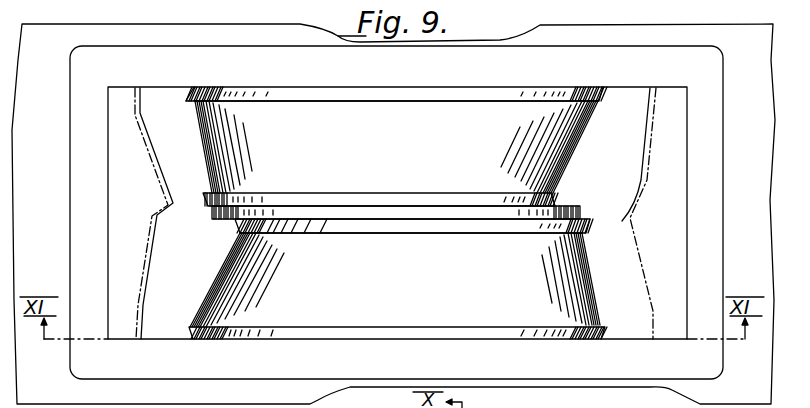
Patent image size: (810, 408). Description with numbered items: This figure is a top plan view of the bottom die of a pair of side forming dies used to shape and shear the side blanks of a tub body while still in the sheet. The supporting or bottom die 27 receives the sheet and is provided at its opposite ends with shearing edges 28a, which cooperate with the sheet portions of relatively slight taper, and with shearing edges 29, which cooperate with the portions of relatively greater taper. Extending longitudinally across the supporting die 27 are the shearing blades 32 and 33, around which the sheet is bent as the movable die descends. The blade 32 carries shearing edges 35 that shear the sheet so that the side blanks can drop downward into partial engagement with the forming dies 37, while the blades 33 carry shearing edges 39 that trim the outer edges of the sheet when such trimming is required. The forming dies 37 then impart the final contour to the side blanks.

The supporting or bottom die 27 is at (710, 216).
The shearing edges 28a is at (152, 260).
The shearing edges 29 is at (157, 167).
The longitudinally extending shearing blade 32 is at (329, 217).
The longitudinally extending shearing blades 33 is at (312, 94).
The shearing edges 35 is at (408, 240).
The forming dies 37 is at (211, 177).
The shearing edges 39 is at (404, 101).